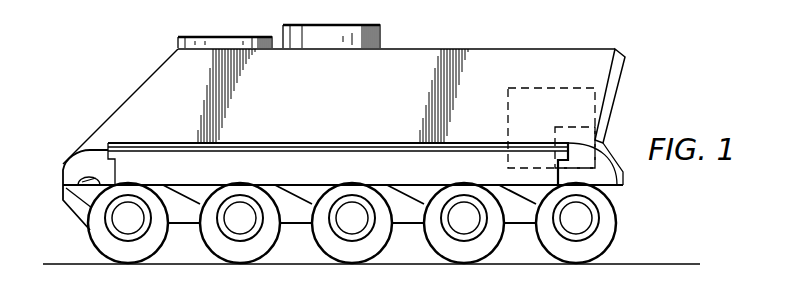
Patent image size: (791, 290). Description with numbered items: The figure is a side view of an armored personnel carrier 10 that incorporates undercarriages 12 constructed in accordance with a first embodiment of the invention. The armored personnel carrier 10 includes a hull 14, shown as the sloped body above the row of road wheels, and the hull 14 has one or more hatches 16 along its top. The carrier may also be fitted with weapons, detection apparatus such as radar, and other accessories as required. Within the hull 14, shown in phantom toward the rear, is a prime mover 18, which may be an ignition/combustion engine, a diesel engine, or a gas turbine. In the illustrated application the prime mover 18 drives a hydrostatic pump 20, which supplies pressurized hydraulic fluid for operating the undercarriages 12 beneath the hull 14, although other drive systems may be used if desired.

The armored personnel carrier 10 is at (66, 133).
The undercarriages 12 is at (623, 234).
The hull 14 is at (141, 87).
The hatches 16 is at (283, 30).
The prime mover 18 is at (553, 99).
The hydrostatic pump 20 is at (583, 138).